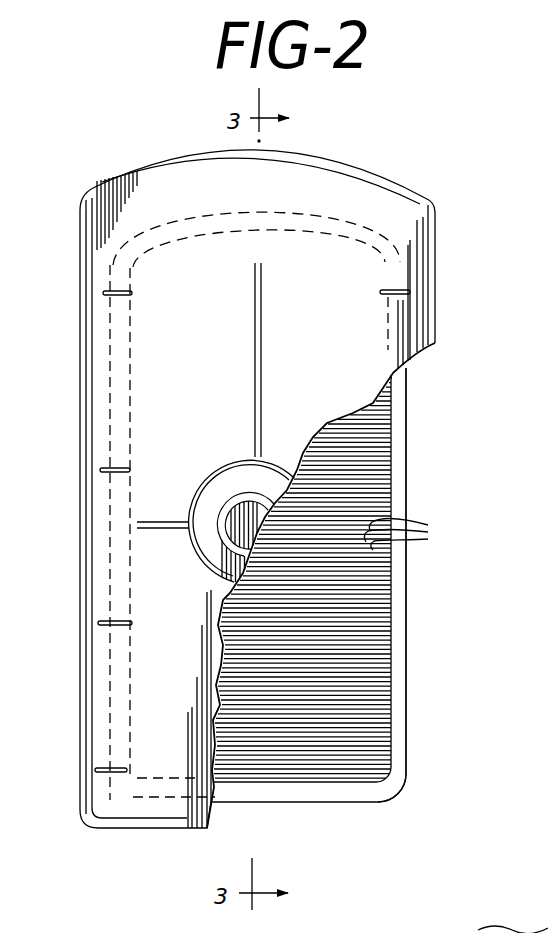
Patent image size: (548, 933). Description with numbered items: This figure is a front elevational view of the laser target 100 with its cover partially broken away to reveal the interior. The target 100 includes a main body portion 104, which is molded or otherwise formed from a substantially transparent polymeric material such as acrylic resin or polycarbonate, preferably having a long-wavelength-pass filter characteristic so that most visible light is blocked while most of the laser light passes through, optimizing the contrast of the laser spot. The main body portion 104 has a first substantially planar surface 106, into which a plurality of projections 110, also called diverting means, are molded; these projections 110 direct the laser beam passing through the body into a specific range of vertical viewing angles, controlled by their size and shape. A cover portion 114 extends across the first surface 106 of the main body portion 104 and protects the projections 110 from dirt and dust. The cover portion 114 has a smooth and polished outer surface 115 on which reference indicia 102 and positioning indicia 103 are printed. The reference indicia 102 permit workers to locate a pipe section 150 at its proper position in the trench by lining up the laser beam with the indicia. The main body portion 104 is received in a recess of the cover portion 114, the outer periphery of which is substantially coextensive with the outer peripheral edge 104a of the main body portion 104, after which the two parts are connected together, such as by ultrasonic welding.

The target 100 is at (121, 140).
The reference indicia 102 is at (284, 492).
The positioning indicia 103 is at (383, 294).
The main body portion 104 is at (399, 640).
The outer peripheral edge of the main body portion 104a is at (400, 780).
The first surface 106 is at (379, 708).
The projections 110 is at (419, 536).
The cover portion 114 is at (217, 194).
The outer surface 115 is at (376, 210).
The pipe section 150 is at (408, 266).